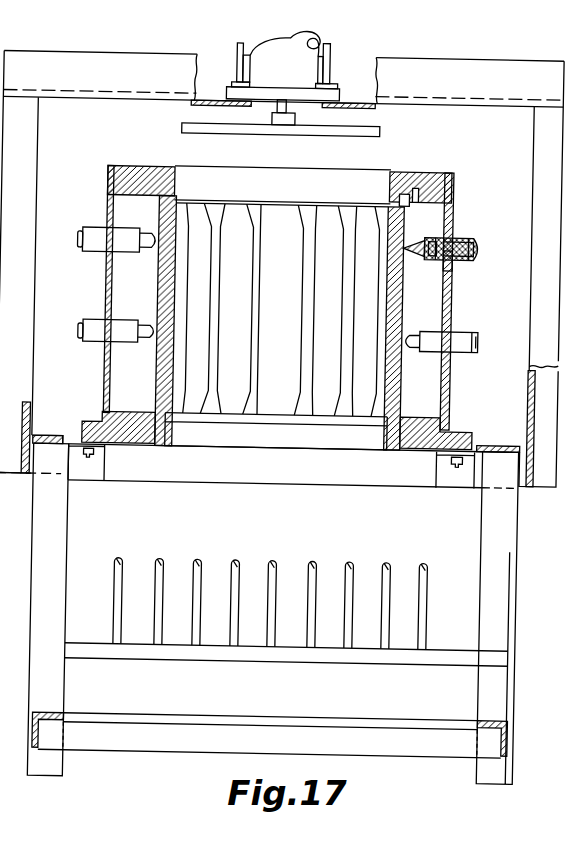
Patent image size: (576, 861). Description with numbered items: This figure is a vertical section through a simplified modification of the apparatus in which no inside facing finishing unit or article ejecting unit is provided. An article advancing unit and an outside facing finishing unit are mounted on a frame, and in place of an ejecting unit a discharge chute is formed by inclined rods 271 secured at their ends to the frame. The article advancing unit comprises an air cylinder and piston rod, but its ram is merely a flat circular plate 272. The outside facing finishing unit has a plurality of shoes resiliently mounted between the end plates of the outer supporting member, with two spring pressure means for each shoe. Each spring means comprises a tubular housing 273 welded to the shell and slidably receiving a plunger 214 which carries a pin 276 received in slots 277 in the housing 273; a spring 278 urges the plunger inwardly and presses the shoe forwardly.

The flat circular plate 272 is at (375, 130).
The cone tip 214 is at (407, 241).
The tubular housing 273 is at (450, 235).
The pin 276 is at (400, 256).
The slots 277 is at (440, 260).
The spring 278 is at (470, 256).
The inclined rods 271 is at (247, 549).